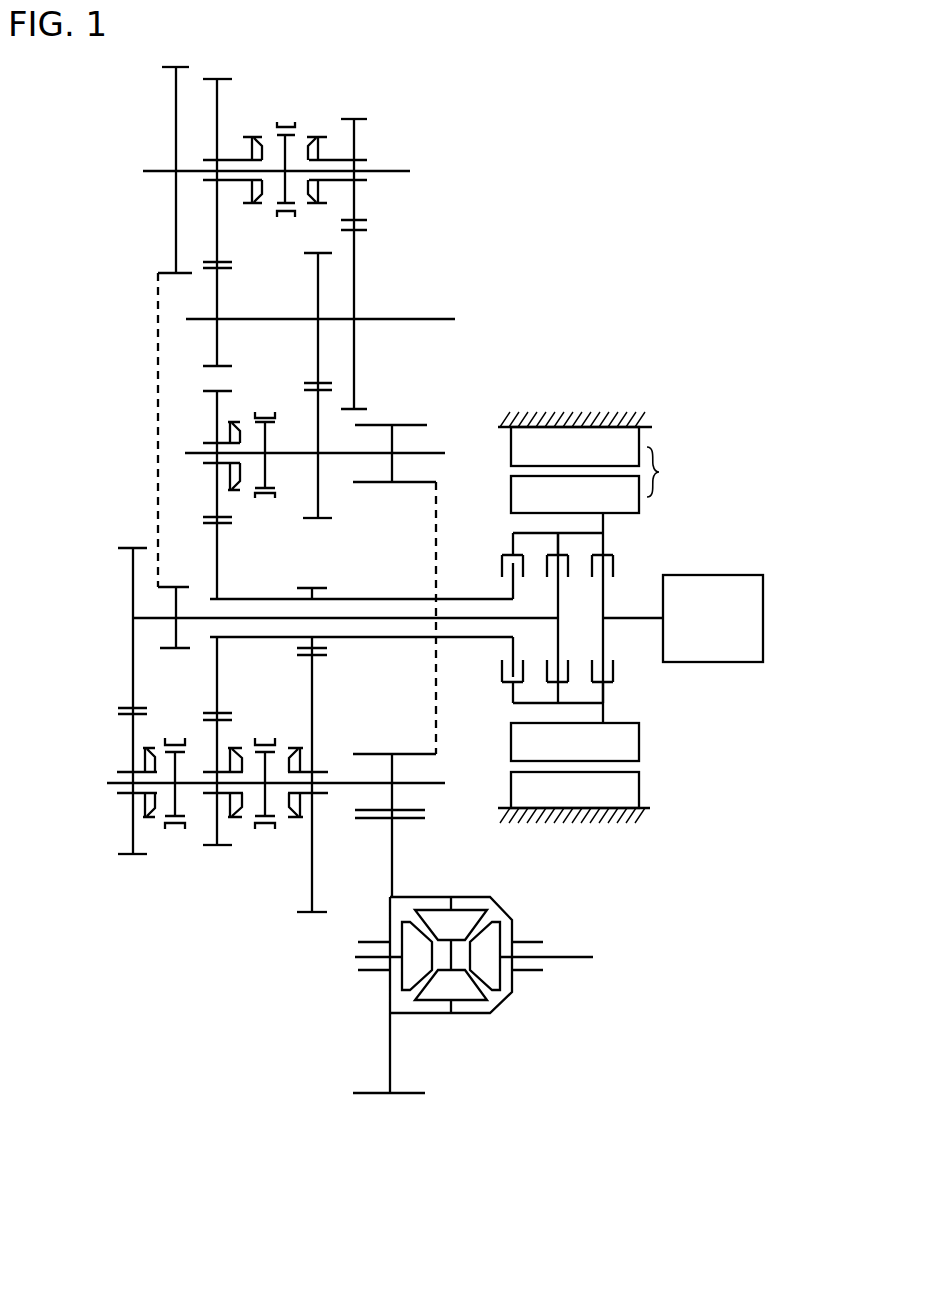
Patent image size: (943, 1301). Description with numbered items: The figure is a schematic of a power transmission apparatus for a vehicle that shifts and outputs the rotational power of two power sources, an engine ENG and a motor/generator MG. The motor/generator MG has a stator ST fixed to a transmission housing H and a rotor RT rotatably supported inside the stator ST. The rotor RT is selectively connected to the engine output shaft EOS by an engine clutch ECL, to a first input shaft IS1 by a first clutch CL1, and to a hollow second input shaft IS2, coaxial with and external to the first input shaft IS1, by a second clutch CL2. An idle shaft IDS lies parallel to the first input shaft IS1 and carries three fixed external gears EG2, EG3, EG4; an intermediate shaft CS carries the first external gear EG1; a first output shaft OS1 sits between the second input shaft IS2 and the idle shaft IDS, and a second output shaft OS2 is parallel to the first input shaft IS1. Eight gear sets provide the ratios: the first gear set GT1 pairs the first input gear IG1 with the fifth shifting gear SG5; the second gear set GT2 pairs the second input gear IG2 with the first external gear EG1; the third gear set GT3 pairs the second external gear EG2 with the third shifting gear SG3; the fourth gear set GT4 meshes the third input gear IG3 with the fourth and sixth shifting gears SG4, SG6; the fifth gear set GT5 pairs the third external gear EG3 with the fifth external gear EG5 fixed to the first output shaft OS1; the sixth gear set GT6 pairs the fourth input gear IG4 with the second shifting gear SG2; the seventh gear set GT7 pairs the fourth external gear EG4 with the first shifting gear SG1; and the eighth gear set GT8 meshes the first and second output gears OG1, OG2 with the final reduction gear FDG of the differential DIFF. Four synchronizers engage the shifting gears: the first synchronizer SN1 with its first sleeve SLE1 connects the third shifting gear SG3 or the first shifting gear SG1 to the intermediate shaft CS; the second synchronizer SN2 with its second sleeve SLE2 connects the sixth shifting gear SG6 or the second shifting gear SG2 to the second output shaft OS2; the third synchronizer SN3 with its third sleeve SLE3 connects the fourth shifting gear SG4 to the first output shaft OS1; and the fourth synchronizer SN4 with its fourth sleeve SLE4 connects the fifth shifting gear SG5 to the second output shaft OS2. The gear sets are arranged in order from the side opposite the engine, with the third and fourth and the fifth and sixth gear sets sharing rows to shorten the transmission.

The first gear set GT1 is at (132, 871).
The second gear set GT2 is at (178, 51).
The third gear set GT3 is at (219, 63).
The fourth gear set GT4 is at (209, 865).
The fifth gear set GT5 is at (298, 533).
The sixth gear set GT6 is at (302, 931).
The seventh gear set GT7 is at (356, 103).
The eighth gear set GT8 is at (388, 1111).
The first synchronizer SN1 is at (309, 60).
The second synchronizer SN2 is at (265, 893).
The third synchronizer SN3 is at (269, 389).
The fourth synchronizer SN4 is at (174, 893).
The first sleeve SLE1 is at (289, 120).
The second sleeve SLE2 is at (266, 832).
The third sleeve SLE3 is at (264, 410).
The fourth sleeve SLE4 is at (178, 832).
The first shifting gear SG1 is at (356, 140).
The second shifting gear SG2 is at (313, 858).
The third shifting gear SG3 is at (218, 115).
The fourth shifting gear SG4 is at (217, 418).
The fifth shifting gear SG5 is at (132, 826).
The sixth shifting gear SG6 is at (218, 837).
The intermediate shaft CS is at (400, 172).
The first external gear EG1 is at (176, 222).
The second external gear EG2 is at (217, 298).
The third external gear EG3 is at (317, 268).
The fourth external gear EG4 is at (354, 272).
The fifth external gear EG5 is at (318, 502).
The idle shaft IDS is at (436, 320).
The first output gear OG1 is at (403, 422).
The second output gear OG2 is at (417, 755).
The first output shaft OS1 is at (443, 453).
The second output shaft OS2 is at (417, 784).
The first input gear IG1 is at (133, 665).
The second input gear IG2 is at (173, 637).
The third input gear IG3 is at (217, 556).
The fourth input gear IG4 is at (318, 595).
The first input shaft IS1 is at (398, 621).
The second input shaft IS2 is at (355, 638).
The first clutch CL1 is at (536, 550).
The second clutch CL2 is at (493, 679).
The engine clutch ECL is at (641, 657).
The transmission housing H is at (574, 414).
The stator ST is at (575, 446).
The rotor RT is at (575, 494).
The motor/generator MG is at (667, 472).
The engine output shaft EOS is at (637, 615).
The engine ENG is at (713, 618).
The final reduction gear FDG is at (392, 858).
The differential DIFF is at (529, 910).